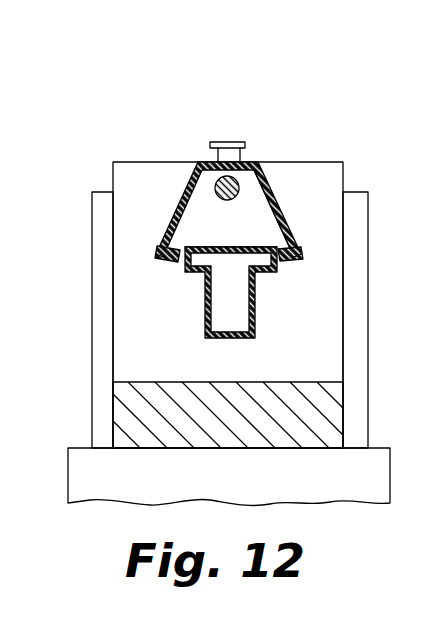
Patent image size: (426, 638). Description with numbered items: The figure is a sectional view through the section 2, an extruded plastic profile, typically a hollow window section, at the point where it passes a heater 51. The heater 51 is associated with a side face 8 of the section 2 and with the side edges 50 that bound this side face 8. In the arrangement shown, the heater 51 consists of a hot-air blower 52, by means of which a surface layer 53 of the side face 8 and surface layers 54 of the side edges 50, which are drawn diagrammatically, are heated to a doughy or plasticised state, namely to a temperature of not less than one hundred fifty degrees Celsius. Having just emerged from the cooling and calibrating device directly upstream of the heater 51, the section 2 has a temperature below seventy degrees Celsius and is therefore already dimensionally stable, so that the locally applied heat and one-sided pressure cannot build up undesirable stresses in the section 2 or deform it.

The section 2 is at (273, 312).
The side face 8 is at (292, 213).
The side edges 50 is at (179, 269).
The heater 51 is at (258, 144).
The hot-air blower 52 is at (262, 211).
The surface layer 53 is at (211, 243).
The surface layers 54 is at (163, 247).